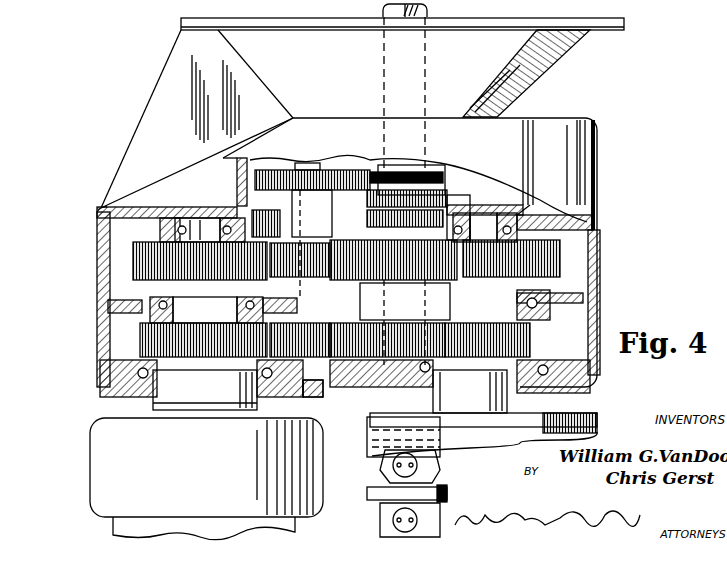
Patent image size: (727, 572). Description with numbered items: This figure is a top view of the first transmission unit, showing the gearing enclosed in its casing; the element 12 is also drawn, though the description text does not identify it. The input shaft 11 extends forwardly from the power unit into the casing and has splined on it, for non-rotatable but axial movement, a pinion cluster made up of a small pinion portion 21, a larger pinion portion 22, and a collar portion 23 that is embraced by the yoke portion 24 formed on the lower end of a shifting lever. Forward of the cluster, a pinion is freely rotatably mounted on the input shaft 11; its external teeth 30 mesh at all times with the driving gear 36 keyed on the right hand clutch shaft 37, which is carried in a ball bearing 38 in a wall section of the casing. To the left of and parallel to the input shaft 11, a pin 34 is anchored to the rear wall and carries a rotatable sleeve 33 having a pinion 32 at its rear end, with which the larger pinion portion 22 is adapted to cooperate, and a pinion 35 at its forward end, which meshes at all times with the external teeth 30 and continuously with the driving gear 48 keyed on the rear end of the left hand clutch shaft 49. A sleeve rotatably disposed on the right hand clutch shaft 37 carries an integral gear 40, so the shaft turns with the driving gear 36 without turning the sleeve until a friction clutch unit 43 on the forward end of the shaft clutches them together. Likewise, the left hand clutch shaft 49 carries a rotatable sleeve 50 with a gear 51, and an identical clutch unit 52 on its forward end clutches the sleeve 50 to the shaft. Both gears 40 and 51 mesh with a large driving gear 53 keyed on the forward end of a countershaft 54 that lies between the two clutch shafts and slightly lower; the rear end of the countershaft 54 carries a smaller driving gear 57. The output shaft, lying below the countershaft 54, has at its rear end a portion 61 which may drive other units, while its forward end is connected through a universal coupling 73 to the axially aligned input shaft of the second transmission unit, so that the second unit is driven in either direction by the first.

The input shaft 11 is at (424, 92).
The mounting bracket 12 is at (533, 72).
The small pinion portion 21 is at (441, 202).
The larger pinion portion 22 is at (370, 200).
The collar portion 23 is at (430, 171).
The yoke portion 24 is at (453, 177).
The external teeth 30 is at (325, 282).
The pinion 32 is at (262, 170).
The sleeve 33 is at (292, 200).
The pin 34 is at (307, 164).
The pinion 35 is at (298, 278).
The driving gear 36 is at (558, 249).
The right hand clutch shaft 37 is at (482, 213).
The ball bearing 38 is at (519, 223).
The gear 40 is at (530, 336).
The friction clutch unit 43 is at (578, 413).
The driving gear 48 is at (133, 248).
The left hand clutch shaft 49 is at (200, 216).
The sleeve 50 is at (205, 312).
The gear 51 is at (140, 345).
The clutch unit 52 is at (92, 470).
The large driving gear 53 is at (318, 382).
The countershaft 54 is at (330, 300).
The smaller driving gear 57 is at (237, 213).
The portion 61 is at (380, 421).
The universal coupling 73 is at (380, 497).